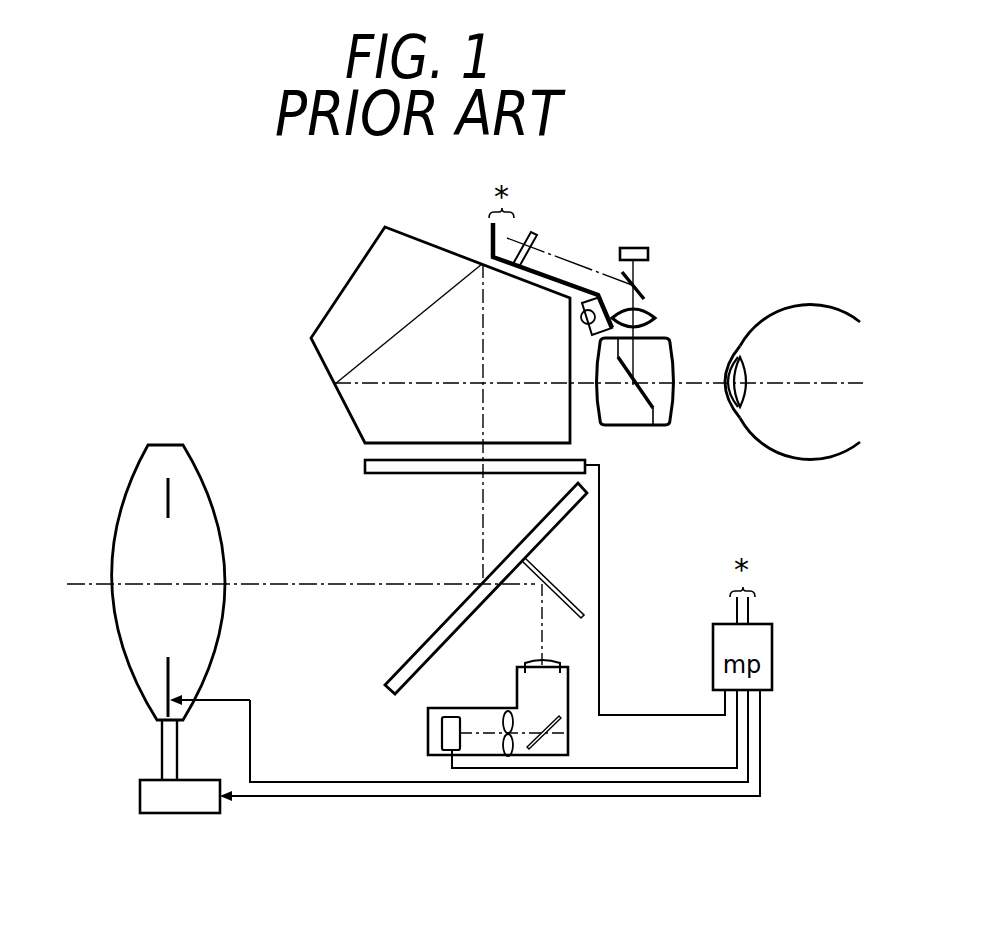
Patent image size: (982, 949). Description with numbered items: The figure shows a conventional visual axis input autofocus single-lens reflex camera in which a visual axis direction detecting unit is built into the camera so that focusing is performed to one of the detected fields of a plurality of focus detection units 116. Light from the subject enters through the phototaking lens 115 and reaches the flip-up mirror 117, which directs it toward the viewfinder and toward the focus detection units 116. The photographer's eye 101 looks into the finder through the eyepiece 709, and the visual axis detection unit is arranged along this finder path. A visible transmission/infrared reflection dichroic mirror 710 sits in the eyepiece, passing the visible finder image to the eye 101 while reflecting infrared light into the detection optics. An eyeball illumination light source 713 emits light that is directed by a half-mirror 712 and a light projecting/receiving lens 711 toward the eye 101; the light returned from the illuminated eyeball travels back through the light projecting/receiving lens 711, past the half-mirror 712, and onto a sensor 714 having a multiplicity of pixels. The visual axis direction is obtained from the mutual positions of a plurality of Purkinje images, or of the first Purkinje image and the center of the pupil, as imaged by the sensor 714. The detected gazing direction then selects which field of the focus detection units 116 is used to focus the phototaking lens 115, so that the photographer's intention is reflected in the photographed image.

The eye of observer 101 is at (808, 304).
The eyepiece 709 is at (668, 344).
The visible transmission/infrared reflection dichroic mirror 710 is at (629, 425).
The light projecting/receiving lens 711 is at (650, 312).
The half-mirror 712 is at (641, 289).
The eyeball illumination light source 713 is at (668, 223).
The sensor having a multiplicity of pixels 714 is at (531, 230).
The phototaking lens 115 is at (114, 668).
The focus detection units 116 is at (570, 738).
The flip-up mirror 117 is at (413, 660).